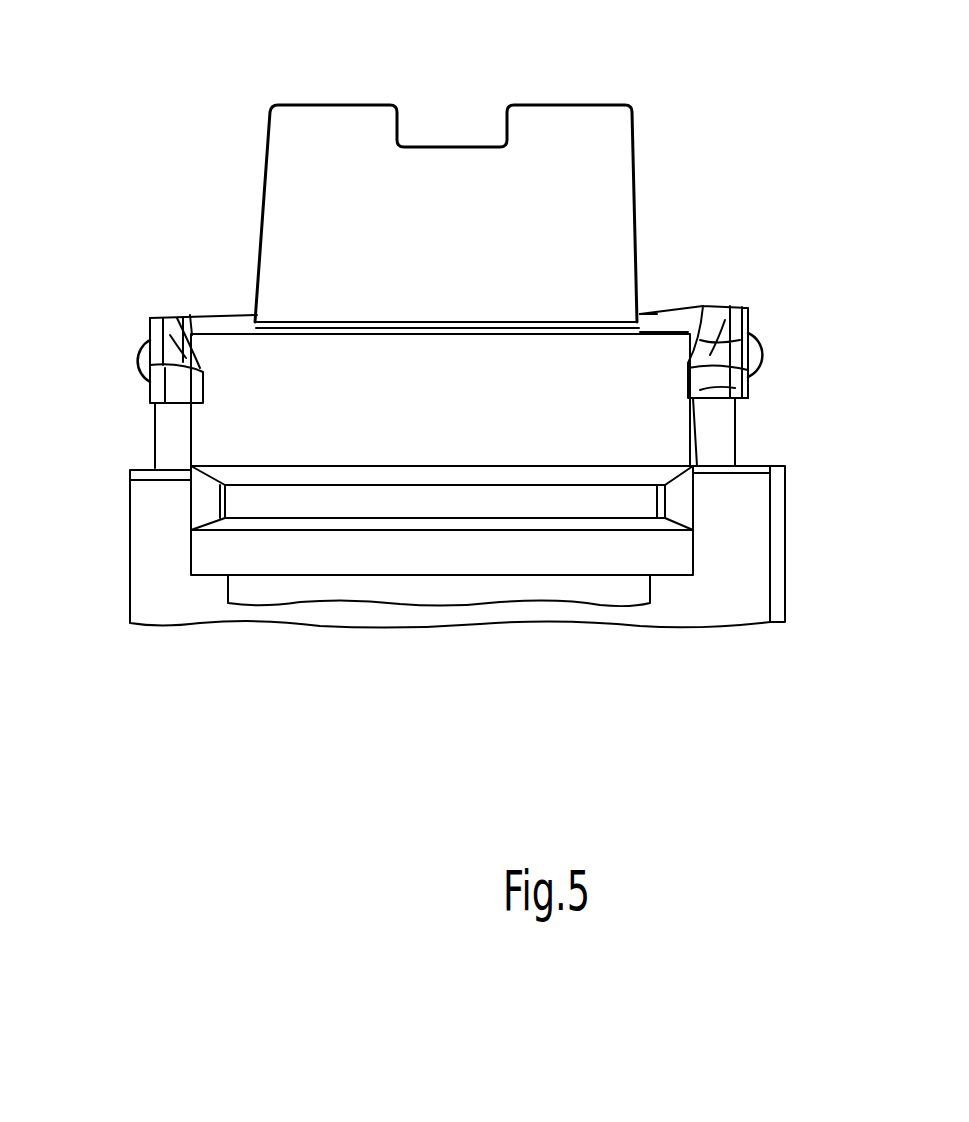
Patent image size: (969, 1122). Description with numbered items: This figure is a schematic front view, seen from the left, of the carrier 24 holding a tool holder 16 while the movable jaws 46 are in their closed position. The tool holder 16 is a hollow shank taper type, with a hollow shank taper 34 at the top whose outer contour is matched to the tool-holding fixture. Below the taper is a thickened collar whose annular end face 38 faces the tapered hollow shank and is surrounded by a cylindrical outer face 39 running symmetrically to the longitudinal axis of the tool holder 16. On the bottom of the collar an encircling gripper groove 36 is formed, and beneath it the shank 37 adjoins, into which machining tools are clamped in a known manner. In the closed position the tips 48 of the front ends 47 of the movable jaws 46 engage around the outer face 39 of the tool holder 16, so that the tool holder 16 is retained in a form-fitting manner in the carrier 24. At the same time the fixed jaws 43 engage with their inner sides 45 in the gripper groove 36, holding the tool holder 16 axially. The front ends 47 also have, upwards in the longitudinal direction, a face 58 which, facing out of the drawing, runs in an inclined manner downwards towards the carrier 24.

The tool holder 16 is at (668, 168).
The carrier 24 is at (718, 440).
The hollow shank taper 34 is at (555, 137).
The gripper groove 36 is at (425, 498).
The shank 37 is at (355, 582).
The annular end face 38 is at (656, 318).
The cylindrical outer face 39 is at (436, 402).
The fixed jaws 43 is at (155, 532).
The inner sides 45 is at (207, 503).
The movable jaws 46 is at (203, 323).
The front ends 47 is at (148, 321).
The tips 48 is at (187, 392).
The face 58 is at (142, 372).